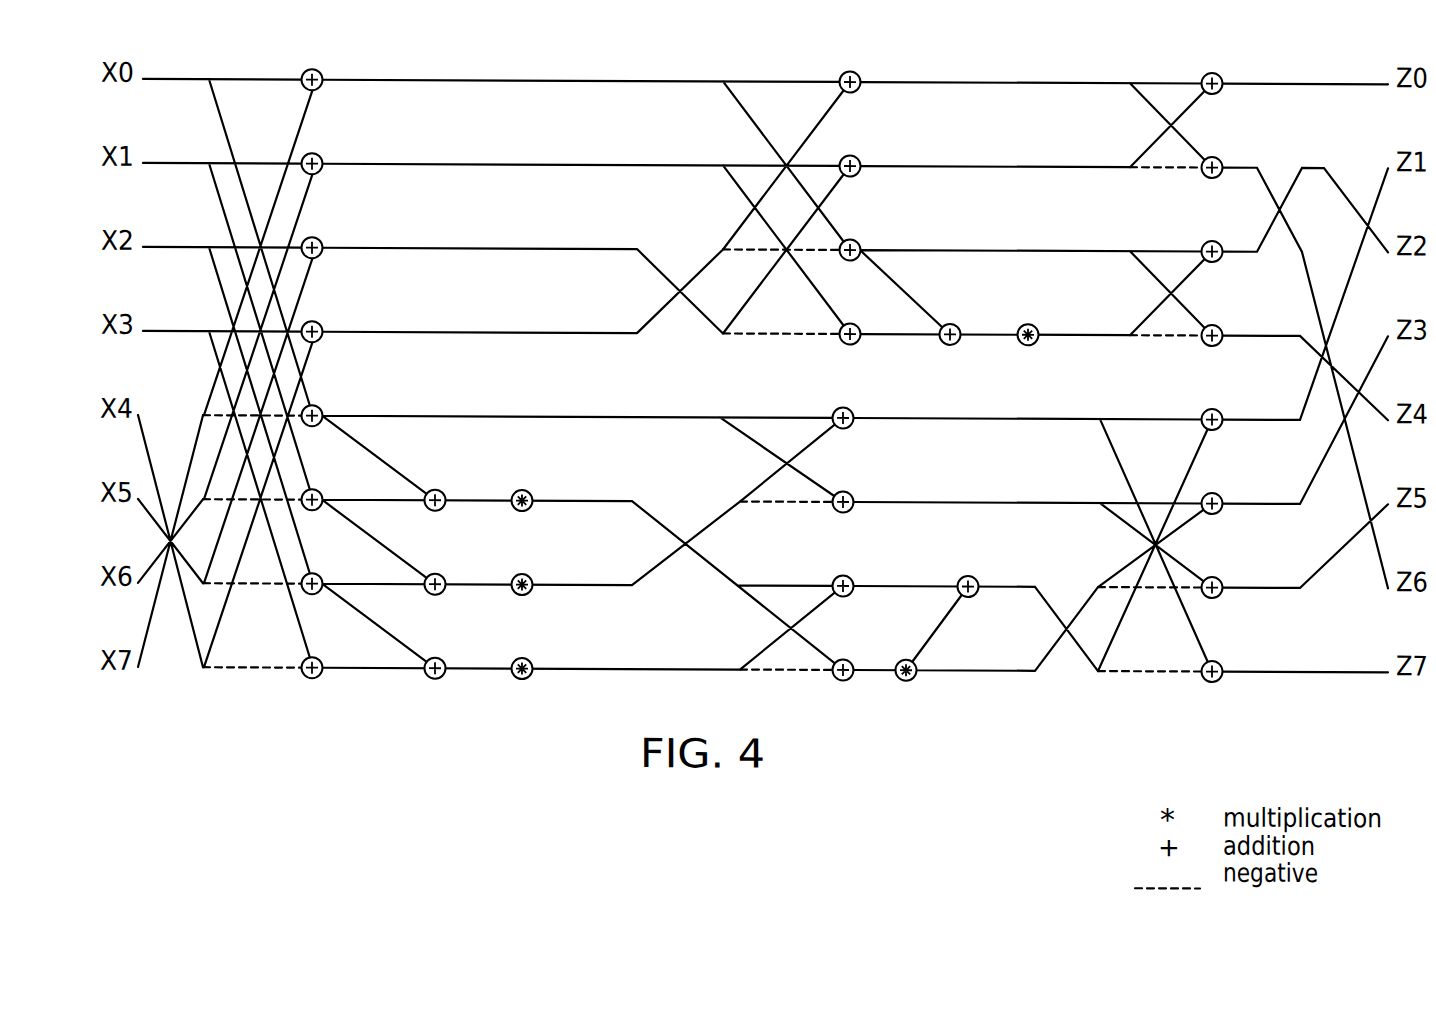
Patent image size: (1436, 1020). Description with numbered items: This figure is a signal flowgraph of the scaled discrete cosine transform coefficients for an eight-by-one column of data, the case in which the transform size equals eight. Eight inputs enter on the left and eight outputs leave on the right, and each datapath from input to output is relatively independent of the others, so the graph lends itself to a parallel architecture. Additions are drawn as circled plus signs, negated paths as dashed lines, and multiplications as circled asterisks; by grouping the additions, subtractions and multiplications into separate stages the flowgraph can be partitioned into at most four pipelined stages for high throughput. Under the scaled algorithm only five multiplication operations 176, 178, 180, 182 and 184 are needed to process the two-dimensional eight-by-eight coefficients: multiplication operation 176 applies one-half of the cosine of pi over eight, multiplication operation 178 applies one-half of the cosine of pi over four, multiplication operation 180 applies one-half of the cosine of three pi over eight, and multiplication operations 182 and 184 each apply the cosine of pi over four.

The multiplication operation 176 is at (522, 489).
The multiplication operation 178 is at (522, 573).
The multiplication operation 180 is at (522, 657).
The multiplication operation 182 is at (1045, 305).
The multiplication operation 184 is at (915, 660).